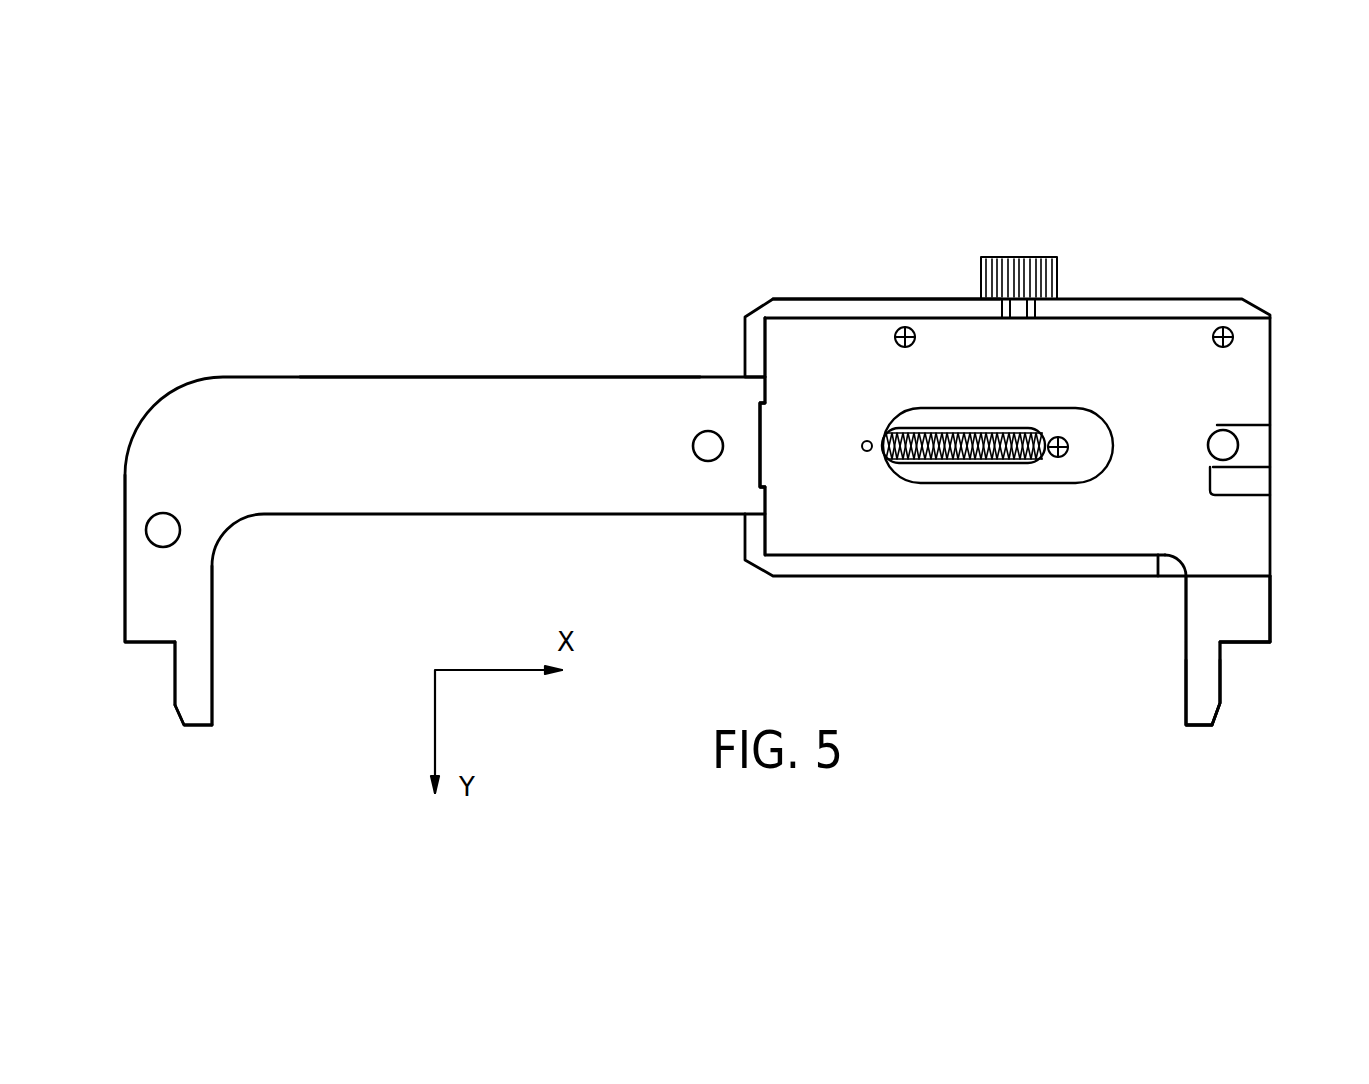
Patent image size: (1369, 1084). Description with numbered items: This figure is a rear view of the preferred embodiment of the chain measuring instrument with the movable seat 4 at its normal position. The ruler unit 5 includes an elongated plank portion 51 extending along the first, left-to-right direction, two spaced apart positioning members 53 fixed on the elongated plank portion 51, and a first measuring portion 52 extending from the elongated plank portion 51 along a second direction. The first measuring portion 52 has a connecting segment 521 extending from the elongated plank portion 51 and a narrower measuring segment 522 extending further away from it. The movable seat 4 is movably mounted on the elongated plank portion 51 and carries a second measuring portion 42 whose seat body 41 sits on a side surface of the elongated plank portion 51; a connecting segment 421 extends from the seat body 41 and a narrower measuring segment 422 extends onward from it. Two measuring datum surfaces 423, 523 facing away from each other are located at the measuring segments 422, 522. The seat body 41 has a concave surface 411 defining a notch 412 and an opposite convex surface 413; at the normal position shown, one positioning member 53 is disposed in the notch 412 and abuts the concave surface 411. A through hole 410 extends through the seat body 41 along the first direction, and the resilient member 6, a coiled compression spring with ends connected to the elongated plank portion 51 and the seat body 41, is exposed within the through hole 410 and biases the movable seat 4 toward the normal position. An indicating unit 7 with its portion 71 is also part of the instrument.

The movable seat 4 is at (1155, 333).
The seat body 41 is at (802, 357).
The through hole 410 is at (1035, 421).
The concave surface 411 is at (1270, 495).
The notch 412 is at (1260, 450).
The convex surface 413 is at (760, 447).
The second measuring portion 42 is at (1183, 610).
The connecting segment 421 is at (1252, 602).
The measuring segment 422 is at (1195, 688).
The measuring datum surface 423 is at (1220, 682).
The ruler unit 5 is at (358, 375).
The elongated plank portion 51 is at (465, 415).
The first measuring portion 52 is at (212, 605).
The connecting segment 521 is at (158, 588).
The measuring segment 522 is at (197, 675).
The measuring datum surface 523 is at (173, 667).
The positioning member 53 is at (703, 440).
The resilient member 6 is at (967, 452).
The indicating unit 7 is at (941, 298).
The cover edge 71 is at (851, 315).